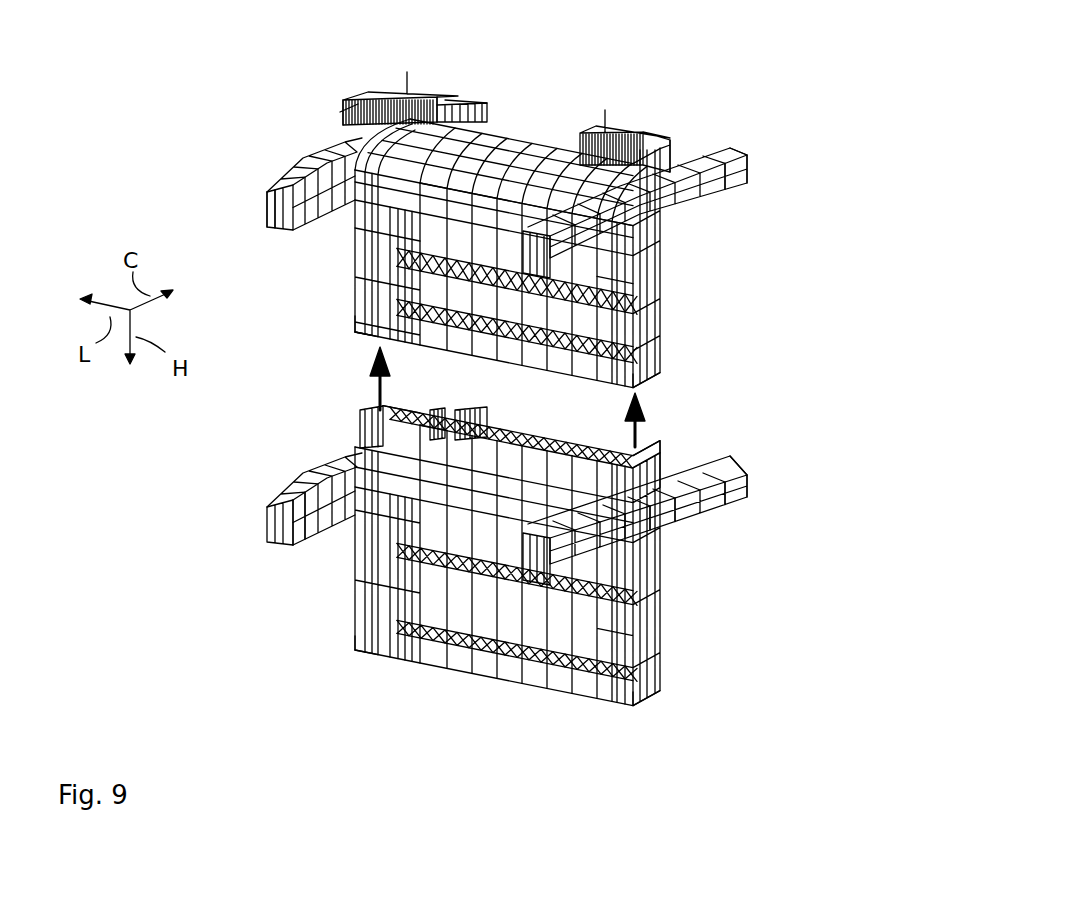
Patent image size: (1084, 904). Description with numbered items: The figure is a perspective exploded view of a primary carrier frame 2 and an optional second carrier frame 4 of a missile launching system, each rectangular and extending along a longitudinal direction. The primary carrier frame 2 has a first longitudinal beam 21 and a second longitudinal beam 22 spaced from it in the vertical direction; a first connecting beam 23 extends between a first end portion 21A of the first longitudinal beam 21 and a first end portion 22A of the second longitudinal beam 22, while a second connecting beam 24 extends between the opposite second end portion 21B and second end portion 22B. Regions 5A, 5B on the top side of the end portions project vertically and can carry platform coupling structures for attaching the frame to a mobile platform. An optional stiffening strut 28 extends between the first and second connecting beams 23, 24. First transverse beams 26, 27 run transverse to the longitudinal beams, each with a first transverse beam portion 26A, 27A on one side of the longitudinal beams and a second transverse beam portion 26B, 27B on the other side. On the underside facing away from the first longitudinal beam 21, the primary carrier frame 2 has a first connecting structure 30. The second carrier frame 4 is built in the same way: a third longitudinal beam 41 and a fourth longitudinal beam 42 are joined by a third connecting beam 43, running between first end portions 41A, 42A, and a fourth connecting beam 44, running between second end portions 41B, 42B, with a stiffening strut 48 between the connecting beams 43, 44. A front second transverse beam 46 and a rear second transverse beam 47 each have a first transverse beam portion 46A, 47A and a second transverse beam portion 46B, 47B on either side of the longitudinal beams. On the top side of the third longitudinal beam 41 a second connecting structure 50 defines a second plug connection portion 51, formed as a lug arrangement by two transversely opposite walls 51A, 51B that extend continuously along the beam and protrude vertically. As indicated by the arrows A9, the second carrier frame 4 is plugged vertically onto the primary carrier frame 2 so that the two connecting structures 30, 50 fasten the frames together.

The primary carrier frame 2 is at (560, 40).
The second carrier frame 4 is at (775, 446).
The projecting region 5A is at (390, 85).
The projecting region 5B is at (641, 128).
The first longitudinal beam 21 is at (508, 128).
The first end portion of the first longitudinal beam 21A is at (353, 92).
The second end portion of the first longitudinal beam 21B is at (660, 118).
The second longitudinal beam 22 is at (524, 342).
The first end portion of the second longitudinal beam 22A is at (348, 322).
The second end portion of the second longitudinal beam 22B is at (670, 357).
The first connecting beam 23 is at (355, 263).
The second connecting beam 24 is at (652, 246).
The first transverse beam 26 is at (290, 165).
The first transverse beam portion 26A is at (286, 182).
The second transverse beam portion 26B is at (468, 100).
The first transverse beam 27 is at (700, 183).
The first transverse beam portion 27A is at (572, 212).
The second transverse beam portion 27B is at (715, 148).
The stiffening strut 28 is at (490, 253).
The first connecting structure 30 is at (364, 342).
The arrows A9 is at (378, 395).
The third longitudinal beam 41 is at (472, 500).
The first end portion of the third longitudinal beam 41A is at (352, 440).
The second end portion of the third longitudinal beam 41B is at (660, 530).
The fourth longitudinal beam 42 is at (488, 660).
The first end portion of the fourth longitudinal beam 42A is at (363, 660).
The second end portion of the fourth longitudinal beam 42B is at (613, 710).
The third connecting beam 43 is at (355, 600).
The fourth connecting beam 44 is at (652, 580).
The front second transverse beam 46 is at (262, 518).
The first transverse beam portion 46A is at (294, 480).
The second transverse beam portion 46B is at (464, 410).
The rear second transverse beam 47 is at (752, 478).
The first transverse beam portion 47A is at (598, 542).
The second transverse beam portion 47B is at (718, 500).
The stiffening strut 48 is at (484, 580).
The second connecting structure 50 is at (440, 412).
The second plug connection portion 51 is at (644, 456).
The wall 51A is at (465, 453).
The wall 51B is at (543, 443).